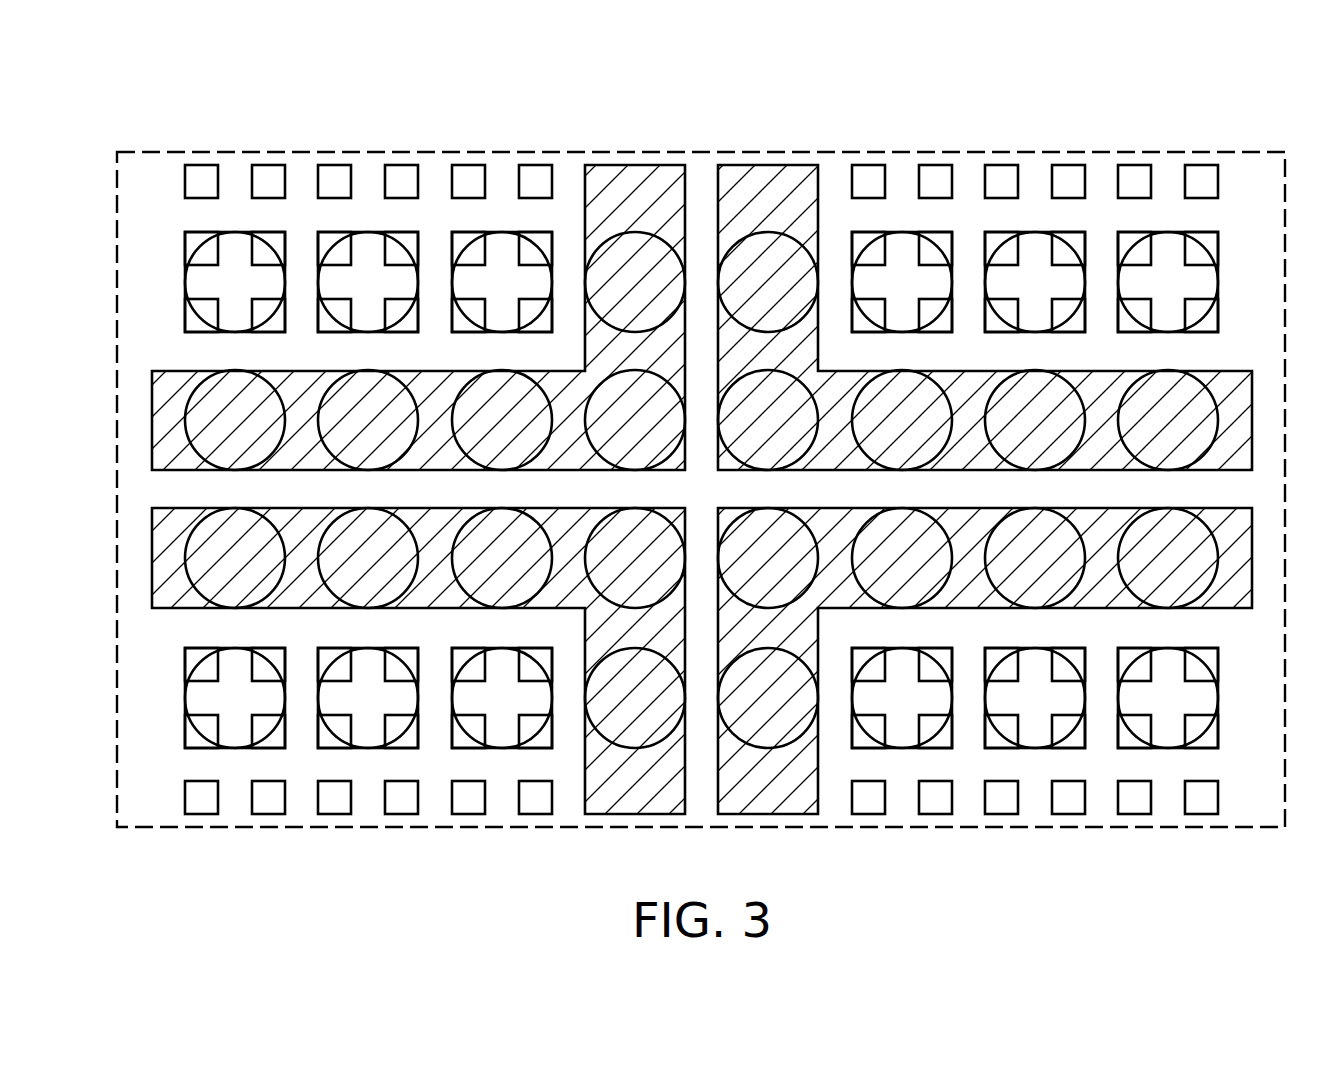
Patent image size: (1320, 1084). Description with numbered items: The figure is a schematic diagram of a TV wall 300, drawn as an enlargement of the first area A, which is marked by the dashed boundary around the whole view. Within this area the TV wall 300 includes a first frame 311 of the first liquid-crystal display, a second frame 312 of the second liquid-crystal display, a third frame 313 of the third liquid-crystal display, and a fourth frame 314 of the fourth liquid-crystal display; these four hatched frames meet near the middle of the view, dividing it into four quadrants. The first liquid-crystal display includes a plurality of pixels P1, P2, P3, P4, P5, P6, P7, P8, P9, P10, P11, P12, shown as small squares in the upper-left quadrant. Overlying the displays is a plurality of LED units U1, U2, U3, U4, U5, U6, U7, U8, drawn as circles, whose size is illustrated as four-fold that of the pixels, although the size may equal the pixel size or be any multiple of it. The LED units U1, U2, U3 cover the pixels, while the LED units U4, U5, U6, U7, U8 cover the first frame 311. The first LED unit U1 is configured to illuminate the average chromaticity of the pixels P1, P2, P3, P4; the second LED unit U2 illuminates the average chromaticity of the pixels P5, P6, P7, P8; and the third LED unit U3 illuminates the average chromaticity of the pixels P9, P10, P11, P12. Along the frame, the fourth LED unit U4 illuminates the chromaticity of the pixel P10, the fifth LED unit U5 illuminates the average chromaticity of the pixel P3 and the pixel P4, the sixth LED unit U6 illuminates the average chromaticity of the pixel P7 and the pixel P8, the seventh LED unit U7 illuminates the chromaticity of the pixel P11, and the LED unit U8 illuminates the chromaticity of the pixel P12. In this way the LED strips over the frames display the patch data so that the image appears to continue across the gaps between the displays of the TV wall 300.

The TV wall 300 is at (1042, 885).
The first area A is at (1252, 150).
The first frame 311 is at (635, 178).
The second frame 312 is at (768, 176).
The third frame 313 is at (625, 800).
The fourth frame 314 is at (777, 800).
The first LED unit U1 is at (196, 252).
The second LED unit U2 is at (328, 252).
The third LED unit U3 is at (462, 252).
The fourth LED unit U4 is at (662, 240).
The fifth LED unit U5 is at (190, 432).
The sixth LED unit U6 is at (323, 432).
The seventh LED unit U7 is at (458, 432).
The eighth LED unit U8 is at (593, 432).
The pixel P1 is at (198, 236).
The pixel P2 is at (272, 236).
The pixel P3 is at (203, 334).
The pixel P4 is at (272, 334).
The pixel P5 is at (332, 236).
The pixel P6 is at (405, 236).
The pixel P7 is at (336, 334).
The pixel P8 is at (405, 334).
The pixel P9 is at (463, 236).
The pixel P10 is at (539, 236).
The pixel P11 is at (468, 334).
The pixel P12 is at (540, 334).